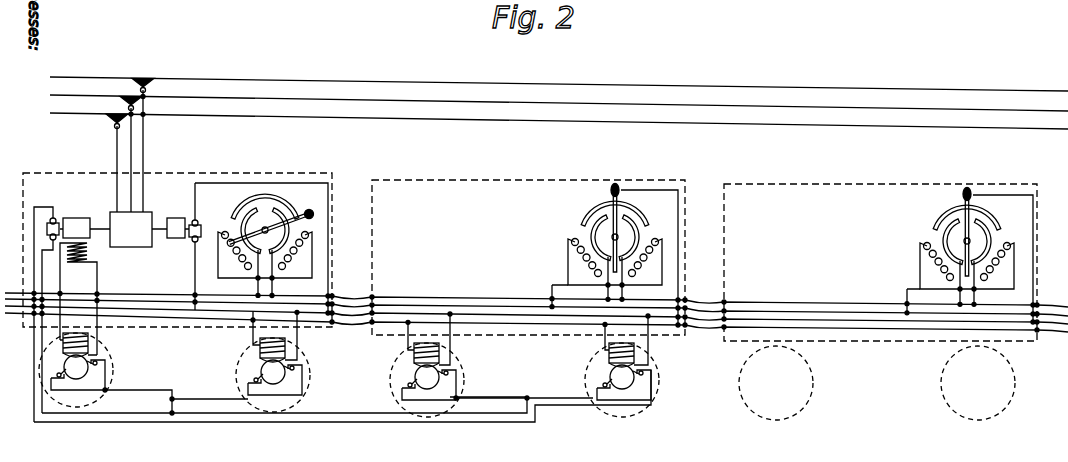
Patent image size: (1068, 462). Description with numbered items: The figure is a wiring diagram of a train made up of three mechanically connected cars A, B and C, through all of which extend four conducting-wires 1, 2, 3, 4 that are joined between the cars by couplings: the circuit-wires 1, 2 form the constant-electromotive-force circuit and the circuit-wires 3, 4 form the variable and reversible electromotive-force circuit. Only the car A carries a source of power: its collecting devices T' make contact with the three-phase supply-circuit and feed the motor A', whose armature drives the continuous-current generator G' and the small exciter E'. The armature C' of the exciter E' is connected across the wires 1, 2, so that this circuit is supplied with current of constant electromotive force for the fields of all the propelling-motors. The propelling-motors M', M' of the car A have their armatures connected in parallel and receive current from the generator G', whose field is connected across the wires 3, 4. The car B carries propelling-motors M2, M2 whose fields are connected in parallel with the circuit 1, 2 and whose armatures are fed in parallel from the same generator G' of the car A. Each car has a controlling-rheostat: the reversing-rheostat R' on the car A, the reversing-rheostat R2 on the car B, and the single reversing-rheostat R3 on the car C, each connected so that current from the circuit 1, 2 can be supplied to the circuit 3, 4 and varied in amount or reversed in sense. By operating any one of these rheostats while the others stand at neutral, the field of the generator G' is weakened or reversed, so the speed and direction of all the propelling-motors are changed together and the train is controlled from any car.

The collecting devices T' is at (559, 136).
The car A is at (177, 239).
The car B is at (528, 244).
The car C is at (880, 251).
The motor A' is at (131, 229).
The continuous-current generator G' is at (71, 310).
The exciter E' is at (170, 218).
The armature of the exciter C' is at (207, 224).
The reversing-rheostat R' is at (261, 249).
The reversing-rheostat R2 is at (615, 256).
The reversing-rheostat R3 is at (970, 256).
The propelling-motors M' is at (342, 366).
The propelling-motors M2 is at (531, 364).
The conducting-wire 1 is at (824, 330).
The conducting-wire 2 is at (846, 322).
The conducting-wire 3 is at (864, 314).
The conducting-wire 4 is at (881, 305).